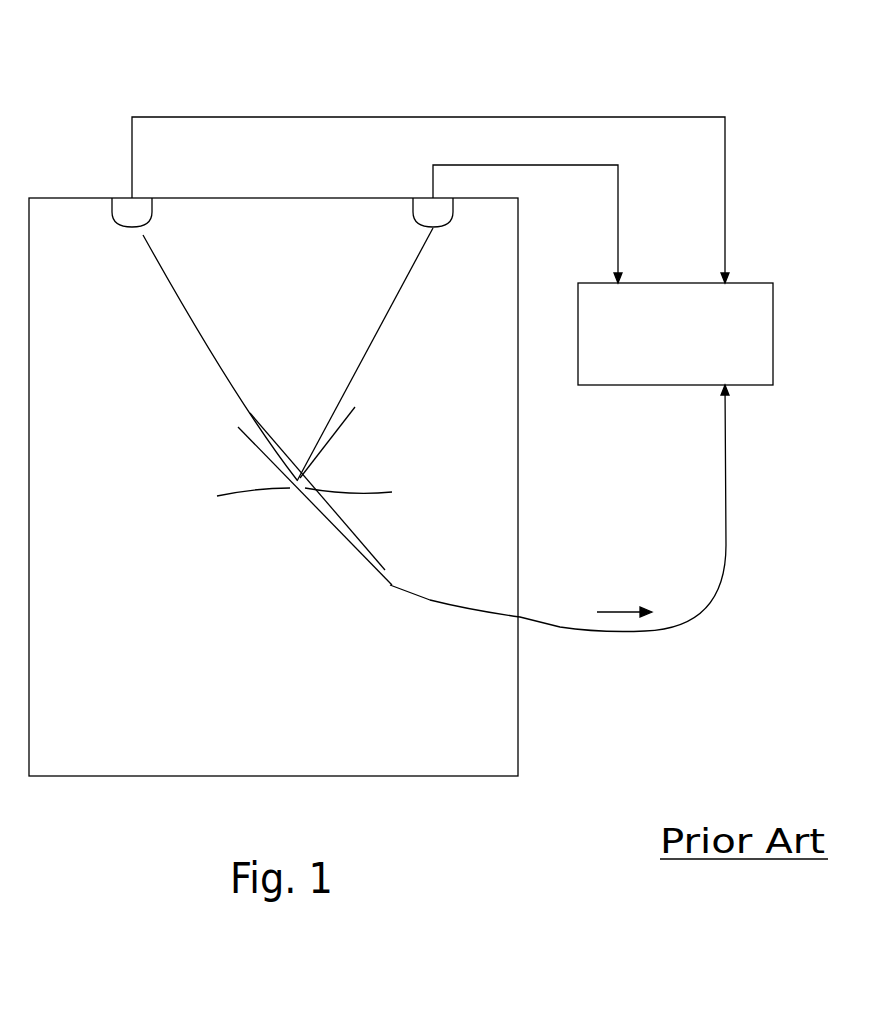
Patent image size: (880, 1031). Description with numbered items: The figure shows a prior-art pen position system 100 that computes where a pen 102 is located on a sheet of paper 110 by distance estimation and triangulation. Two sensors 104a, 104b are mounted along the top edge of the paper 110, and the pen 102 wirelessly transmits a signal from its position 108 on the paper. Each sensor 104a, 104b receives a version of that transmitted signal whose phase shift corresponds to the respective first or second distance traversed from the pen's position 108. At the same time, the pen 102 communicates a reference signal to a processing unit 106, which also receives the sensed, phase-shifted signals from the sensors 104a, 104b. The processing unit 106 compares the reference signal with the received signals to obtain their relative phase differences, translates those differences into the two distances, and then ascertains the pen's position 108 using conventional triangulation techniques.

The pen position system 100 is at (718, 58).
The pen 102 is at (392, 582).
The sensor 104a is at (159, 228).
The sensor 104b is at (414, 229).
The processing unit 106 is at (675, 351).
The pen's position 108 is at (304, 535).
The paper 110 is at (273, 487).